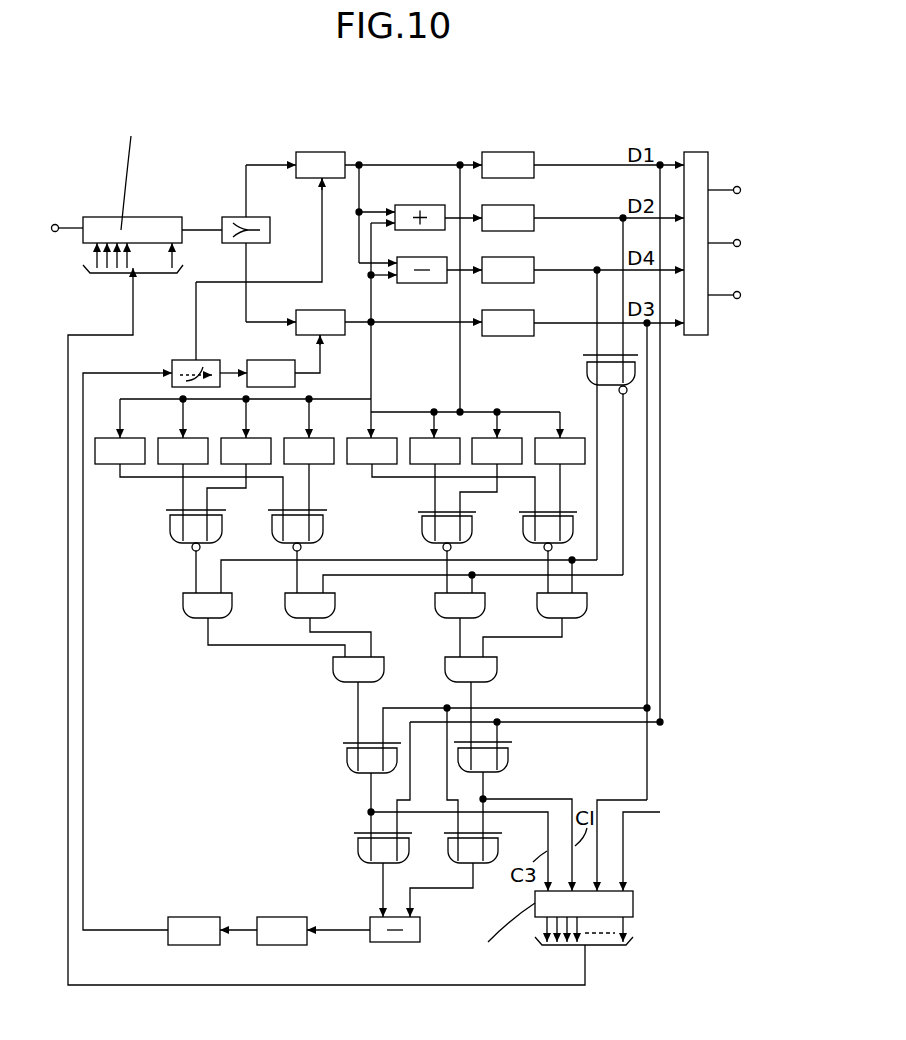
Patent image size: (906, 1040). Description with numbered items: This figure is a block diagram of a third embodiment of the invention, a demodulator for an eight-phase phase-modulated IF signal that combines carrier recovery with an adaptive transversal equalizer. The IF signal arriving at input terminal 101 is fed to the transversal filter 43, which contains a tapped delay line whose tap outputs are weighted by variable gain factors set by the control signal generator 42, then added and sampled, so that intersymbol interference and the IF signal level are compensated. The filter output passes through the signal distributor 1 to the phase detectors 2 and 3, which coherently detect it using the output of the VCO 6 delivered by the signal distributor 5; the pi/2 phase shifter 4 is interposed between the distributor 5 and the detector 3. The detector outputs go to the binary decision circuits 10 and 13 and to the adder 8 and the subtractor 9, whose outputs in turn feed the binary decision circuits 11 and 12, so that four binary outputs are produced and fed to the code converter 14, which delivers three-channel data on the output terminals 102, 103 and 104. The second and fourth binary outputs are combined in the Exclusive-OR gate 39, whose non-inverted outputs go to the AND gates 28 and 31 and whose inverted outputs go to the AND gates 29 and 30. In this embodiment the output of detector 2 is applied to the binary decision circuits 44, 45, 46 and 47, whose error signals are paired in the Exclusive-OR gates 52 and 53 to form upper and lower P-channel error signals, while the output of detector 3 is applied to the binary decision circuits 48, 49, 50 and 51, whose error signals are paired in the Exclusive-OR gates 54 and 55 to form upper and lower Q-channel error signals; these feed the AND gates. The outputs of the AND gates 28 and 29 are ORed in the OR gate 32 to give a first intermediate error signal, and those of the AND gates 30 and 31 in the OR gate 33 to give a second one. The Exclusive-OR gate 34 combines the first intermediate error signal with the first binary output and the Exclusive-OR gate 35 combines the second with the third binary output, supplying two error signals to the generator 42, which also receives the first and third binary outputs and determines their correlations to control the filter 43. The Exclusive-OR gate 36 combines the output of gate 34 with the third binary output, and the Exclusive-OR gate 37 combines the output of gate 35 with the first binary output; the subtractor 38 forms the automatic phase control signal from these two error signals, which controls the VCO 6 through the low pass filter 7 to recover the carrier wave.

The signal distributor 1 is at (232, 217).
The phase detector 2 is at (318, 152).
The phase detector 3 is at (323, 310).
The pi/2 phase shifter 4 is at (259, 360).
The signal distributor 5 is at (207, 360).
The VCO 6 is at (195, 917).
The low pass filter 7 is at (283, 917).
The adder 8 is at (413, 205).
The subtractor 9 is at (416, 283).
The binary decision circuit 10 is at (507, 152).
The binary decision circuit 11 is at (518, 205).
The binary decision circuit 12 is at (518, 257).
The binary decision circuit 13 is at (518, 310).
The code converter 14 is at (700, 152).
The AND gate 28 is at (587, 605).
The AND gate 29 is at (485, 602).
The AND gate 30 is at (335, 607).
The AND gate 31 is at (240, 604).
The OR gate 32 is at (497, 666).
The OR gate 33 is at (384, 667).
The Exclusive-OR gate 34 is at (508, 754).
The Exclusive-OR gate 35 is at (347, 764).
The Exclusive-OR gate 36 is at (498, 839).
The Exclusive-OR gate 37 is at (358, 849).
The subtractor 38 is at (420, 923).
The Exclusive-OR gate 39 is at (587, 371).
The control signal generator 42 is at (635, 903).
The transversal filter 43 is at (153, 217).
The binary decision circuit 44 is at (575, 438).
The binary decision circuit 45 is at (510, 428).
The binary decision circuit 46 is at (447, 428).
The binary decision circuit 47 is at (381, 428).
The binary decision circuit 48 is at (318, 438).
The binary decision circuit 49 is at (255, 438).
The binary decision circuit 50 is at (192, 438).
The binary decision circuit 51 is at (128, 438).
The Exclusive-OR gate 52 is at (523, 521).
The Exclusive-OR gate 53 is at (422, 516).
The Exclusive-OR gate 54 is at (318, 513).
The Exclusive-OR gate 55 is at (170, 528).
The input terminal 101 is at (55, 224).
The output terminal 102 is at (738, 187).
The output terminal 103 is at (738, 240).
The output terminal 104 is at (738, 292).